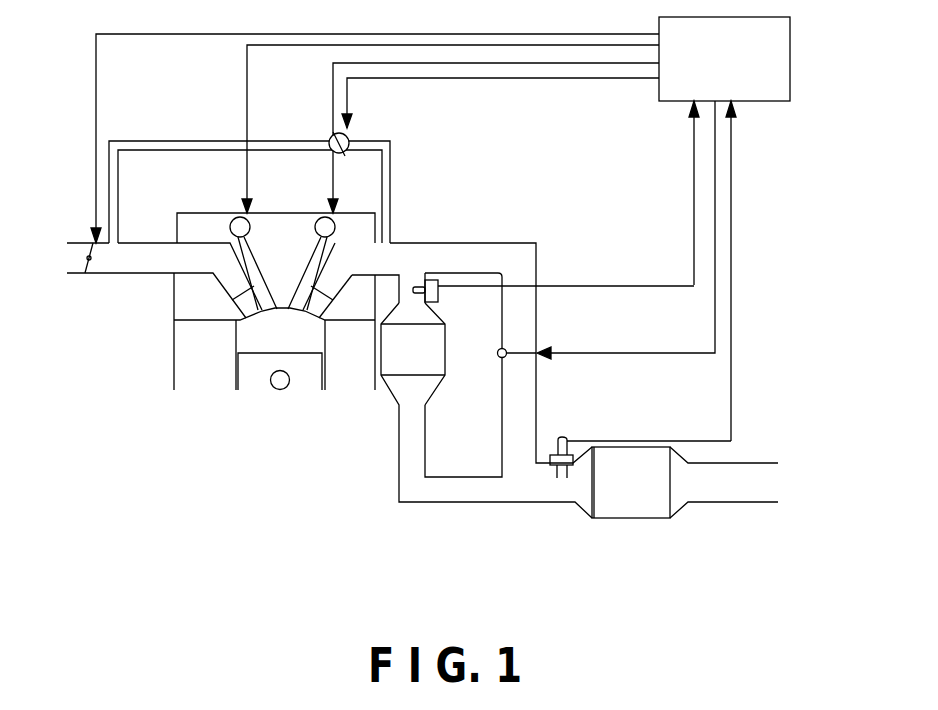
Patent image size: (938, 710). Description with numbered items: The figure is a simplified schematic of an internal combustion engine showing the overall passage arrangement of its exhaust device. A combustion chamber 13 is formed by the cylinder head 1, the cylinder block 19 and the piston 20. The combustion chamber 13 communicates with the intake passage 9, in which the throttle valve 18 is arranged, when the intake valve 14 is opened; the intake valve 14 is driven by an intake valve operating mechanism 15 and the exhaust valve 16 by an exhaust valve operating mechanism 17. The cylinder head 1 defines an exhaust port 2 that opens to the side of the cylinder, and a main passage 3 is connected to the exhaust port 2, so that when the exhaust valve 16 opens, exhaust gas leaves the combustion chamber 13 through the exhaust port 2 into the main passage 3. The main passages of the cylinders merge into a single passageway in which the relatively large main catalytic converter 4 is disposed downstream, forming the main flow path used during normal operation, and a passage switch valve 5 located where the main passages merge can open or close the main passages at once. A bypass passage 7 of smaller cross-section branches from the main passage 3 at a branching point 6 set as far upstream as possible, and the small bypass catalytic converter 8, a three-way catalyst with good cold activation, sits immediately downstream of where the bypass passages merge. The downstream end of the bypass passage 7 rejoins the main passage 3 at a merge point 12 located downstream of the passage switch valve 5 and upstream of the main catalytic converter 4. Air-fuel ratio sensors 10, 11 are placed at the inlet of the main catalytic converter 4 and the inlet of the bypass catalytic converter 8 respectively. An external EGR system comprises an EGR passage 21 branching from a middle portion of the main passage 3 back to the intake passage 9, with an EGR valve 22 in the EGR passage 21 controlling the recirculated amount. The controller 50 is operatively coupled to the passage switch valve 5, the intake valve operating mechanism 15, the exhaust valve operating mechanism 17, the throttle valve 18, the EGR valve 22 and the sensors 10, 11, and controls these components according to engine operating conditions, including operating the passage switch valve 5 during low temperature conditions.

The cylinder head 1 is at (197, 222).
The exhaust port 2 is at (346, 235).
The main passage 3 is at (508, 243).
The main catalytic converter 4 is at (625, 507).
The passage switch valve 5 is at (517, 347).
The branching point 6 is at (415, 268).
The bypass passage 7 is at (383, 268).
The bypass catalytic converter 8 is at (433, 340).
The intake passage 9 is at (125, 267).
The air-fuel ratio sensor 10 is at (562, 435).
The air-fuel ratio sensor 11 is at (440, 291).
The merge point 12 is at (522, 475).
The combustion chamber 13 is at (258, 333).
The intake valve 14 is at (233, 300).
The intake valve operating mechanism 15 is at (232, 212).
The exhaust valve 16 is at (322, 300).
The exhaust valve operating mechanism 17 is at (319, 212).
The throttle valve 18 is at (87, 238).
The cylinder block 19 is at (175, 365).
The piston 20 is at (250, 375).
The EGR passage 21 is at (397, 150).
The EGR valve 22 is at (330, 137).
The controller 50 is at (792, 53).